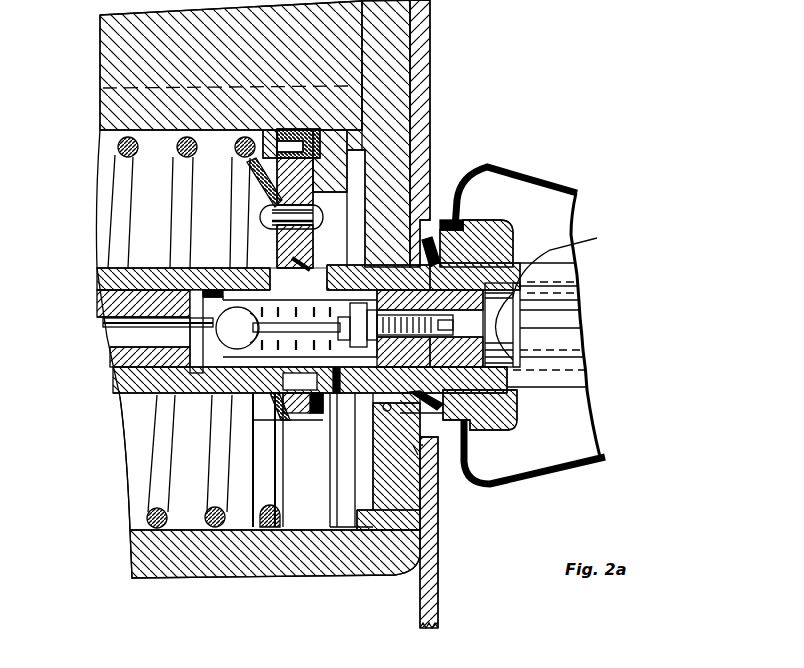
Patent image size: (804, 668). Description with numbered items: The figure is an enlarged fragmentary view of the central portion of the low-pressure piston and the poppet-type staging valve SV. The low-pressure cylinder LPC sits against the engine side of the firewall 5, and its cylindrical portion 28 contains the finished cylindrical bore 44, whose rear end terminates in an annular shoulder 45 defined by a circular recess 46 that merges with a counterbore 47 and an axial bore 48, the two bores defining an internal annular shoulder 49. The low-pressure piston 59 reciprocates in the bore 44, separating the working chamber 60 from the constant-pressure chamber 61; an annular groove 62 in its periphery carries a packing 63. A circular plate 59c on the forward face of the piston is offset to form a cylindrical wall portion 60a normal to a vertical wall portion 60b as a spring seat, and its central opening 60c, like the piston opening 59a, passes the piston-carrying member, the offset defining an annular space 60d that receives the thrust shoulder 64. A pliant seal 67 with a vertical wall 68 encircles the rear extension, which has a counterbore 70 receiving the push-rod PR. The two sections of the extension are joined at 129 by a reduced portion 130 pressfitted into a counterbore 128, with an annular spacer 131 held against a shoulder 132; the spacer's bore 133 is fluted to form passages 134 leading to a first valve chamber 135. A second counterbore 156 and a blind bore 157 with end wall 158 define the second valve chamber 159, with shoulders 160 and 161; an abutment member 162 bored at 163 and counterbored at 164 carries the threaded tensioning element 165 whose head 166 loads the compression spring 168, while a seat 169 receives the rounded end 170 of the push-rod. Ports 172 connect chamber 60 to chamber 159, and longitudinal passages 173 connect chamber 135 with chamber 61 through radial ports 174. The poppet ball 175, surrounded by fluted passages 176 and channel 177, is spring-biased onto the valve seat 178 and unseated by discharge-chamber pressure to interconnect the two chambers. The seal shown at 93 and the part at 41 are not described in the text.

The annular shoulder 45 is at (347, 138).
The circular plate 59c is at (243, 163).
The fluid passages 176 is at (368, 250).
The packing 63 is at (307, 128).
The annular groove 62 is at (308, 163).
The annular thrust shoulder 64 is at (289, 268).
The O-ring seals 93 is at (120, 147).
The low-pressure working chamber 60 is at (222, 187).
The annular spacer 131 is at (142, 383).
The ports 172 is at (258, 265).
The internal annular shoulder 161 is at (378, 277).
The spring tensioning element 165 is at (475, 276).
The circular opening 60c is at (298, 279).
The central bore 133 is at (178, 313).
The joint 129 is at (215, 270).
The annular shoulder 132 is at (172, 289).
The staging valve means SV is at (222, 275).
The fluid passages 134 is at (113, 371).
The first annular valve chamber 135 is at (113, 388).
The longitudinal passages 173 is at (310, 380).
The annular valve seat 178 is at (210, 322).
The poppet-type ball 175 is at (248, 336).
The blind axial bore 157 is at (326, 305).
The second valve chamber 159 is at (342, 303).
The axial bore 163 is at (430, 323).
The annular head 166 is at (403, 352).
The counterbore 164 is at (465, 337).
The free rounded end 170 is at (509, 321).
The vertical wall 68 is at (433, 235).
The internal annular shoulder 49 is at (440, 250).
The axial bore 48 is at (523, 267).
The sheet metal shell 41 is at (517, 200).
The abutment member 162 is at (574, 242).
The push-rod PR is at (582, 330).
The counterbore 70 is at (583, 285).
The seat 169 is at (582, 310).
The second counterbore 156 is at (583, 358).
The annular internal shoulder 160 is at (517, 406).
The pliant seal 67 is at (477, 430).
The counterbore 128 is at (168, 405).
The end wall 158 is at (213, 398).
The reduced diameter portion 130 is at (227, 405).
The internal channel 177 is at (230, 405).
The vertical wall portion 60b is at (273, 475).
The cylindrical wall portion 60a is at (257, 530).
The annular space 60d is at (290, 413).
The low-pressure piston 59 is at (303, 530).
The central circular opening 59a is at (383, 489).
The radial ports 174 is at (418, 468).
The counterbore 47 is at (408, 430).
The compression spring 168 is at (413, 455).
The circular recess 46 is at (385, 512).
The low-pressure cylinder LPC is at (172, 589).
The cylindrical bore 44 is at (128, 531).
The cylindrical portion 28 is at (386, 578).
The constant pressure chamber 61 is at (400, 490).
The firewall 5 is at (445, 605).